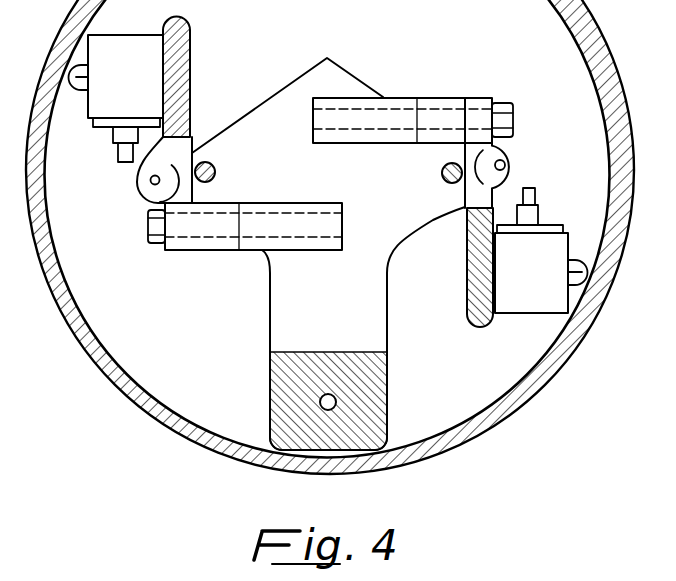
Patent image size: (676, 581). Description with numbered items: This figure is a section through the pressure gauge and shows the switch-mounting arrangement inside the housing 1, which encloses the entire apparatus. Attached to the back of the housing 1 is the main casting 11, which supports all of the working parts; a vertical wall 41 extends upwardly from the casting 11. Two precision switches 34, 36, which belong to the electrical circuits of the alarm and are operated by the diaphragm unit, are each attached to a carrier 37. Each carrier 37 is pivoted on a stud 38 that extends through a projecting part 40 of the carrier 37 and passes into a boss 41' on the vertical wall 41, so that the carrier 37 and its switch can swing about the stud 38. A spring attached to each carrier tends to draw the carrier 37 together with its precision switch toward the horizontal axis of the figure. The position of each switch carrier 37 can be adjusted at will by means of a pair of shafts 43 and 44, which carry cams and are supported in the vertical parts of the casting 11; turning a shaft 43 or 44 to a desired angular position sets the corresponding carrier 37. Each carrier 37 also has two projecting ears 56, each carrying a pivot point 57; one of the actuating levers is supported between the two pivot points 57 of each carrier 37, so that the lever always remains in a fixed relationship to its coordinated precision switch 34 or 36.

The housing 1 is at (537, 382).
The main casting 11 is at (387, 392).
The precision switch 34 is at (544, 289).
The precision switch 36 is at (137, 89).
The carrier 37 is at (190, 28).
The stud 38 is at (152, 245).
The projecting part 40 is at (230, 242).
The vertical wall 41 is at (287, 108).
The boss 41' is at (328, 173).
The shaft 43 is at (447, 183).
The shaft 44 is at (214, 177).
The projecting ear 56 is at (140, 188).
The pivot point 57 is at (150, 179).